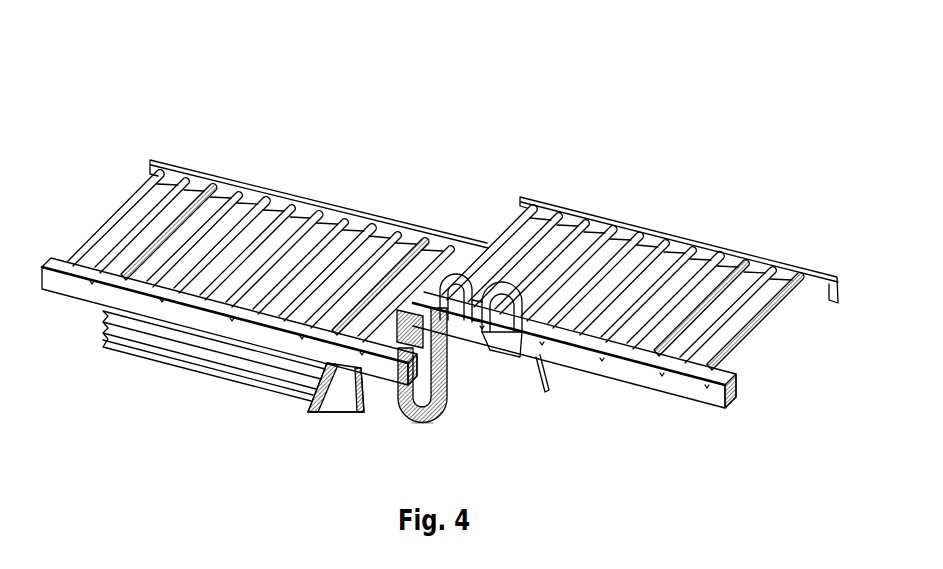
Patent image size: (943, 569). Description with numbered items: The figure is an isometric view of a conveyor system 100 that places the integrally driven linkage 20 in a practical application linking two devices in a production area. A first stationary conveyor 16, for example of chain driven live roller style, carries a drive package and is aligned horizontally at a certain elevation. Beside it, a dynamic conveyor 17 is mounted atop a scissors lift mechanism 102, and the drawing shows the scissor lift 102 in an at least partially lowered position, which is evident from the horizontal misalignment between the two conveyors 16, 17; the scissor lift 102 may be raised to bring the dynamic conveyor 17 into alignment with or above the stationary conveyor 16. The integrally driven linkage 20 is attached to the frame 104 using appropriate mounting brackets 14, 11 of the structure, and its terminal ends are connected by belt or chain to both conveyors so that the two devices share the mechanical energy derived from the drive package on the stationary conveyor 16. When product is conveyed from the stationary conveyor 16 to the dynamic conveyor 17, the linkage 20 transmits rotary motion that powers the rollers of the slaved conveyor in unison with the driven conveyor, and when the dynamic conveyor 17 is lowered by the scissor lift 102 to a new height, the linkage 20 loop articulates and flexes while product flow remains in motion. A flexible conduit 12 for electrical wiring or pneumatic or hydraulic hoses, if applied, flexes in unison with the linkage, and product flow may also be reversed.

The conveyor system 100 is at (542, 80).
The first conveyor section frame 11 is at (350, 418).
The flexible conduit 12 is at (447, 400).
The mounting bracket 14 is at (336, 368).
The stationary conveyor 16 is at (680, 233).
The dynamic conveyor 17 is at (327, 207).
The integrally driven linkage 20 is at (410, 446).
The scissors lift mechanism 102 is at (200, 371).
The frame 104 is at (538, 364).